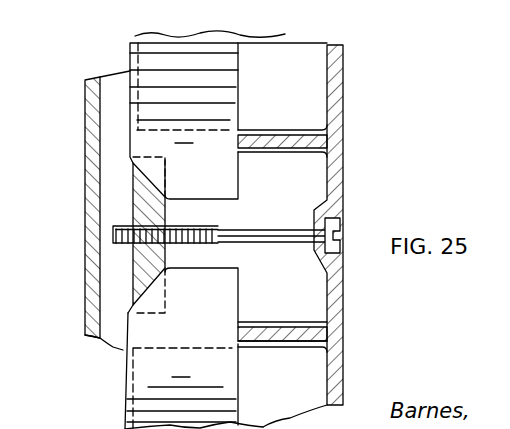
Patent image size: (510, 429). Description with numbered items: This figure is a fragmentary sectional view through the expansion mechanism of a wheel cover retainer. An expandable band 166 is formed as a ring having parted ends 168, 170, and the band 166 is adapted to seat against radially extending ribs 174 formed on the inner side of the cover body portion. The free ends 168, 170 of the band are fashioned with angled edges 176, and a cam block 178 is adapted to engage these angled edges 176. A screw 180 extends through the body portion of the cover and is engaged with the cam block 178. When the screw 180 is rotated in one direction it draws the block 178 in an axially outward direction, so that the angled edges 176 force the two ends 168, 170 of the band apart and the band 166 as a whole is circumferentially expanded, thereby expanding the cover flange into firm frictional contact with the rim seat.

The expandable band 166 is at (228, 62).
The parted end of band 168 is at (232, 177).
The parted end of band 170 is at (232, 287).
The radially extending ribs 174 is at (281, 137).
The angled edges 176 is at (135, 181).
The cam block 178 is at (133, 212).
The screw 180 is at (343, 216).